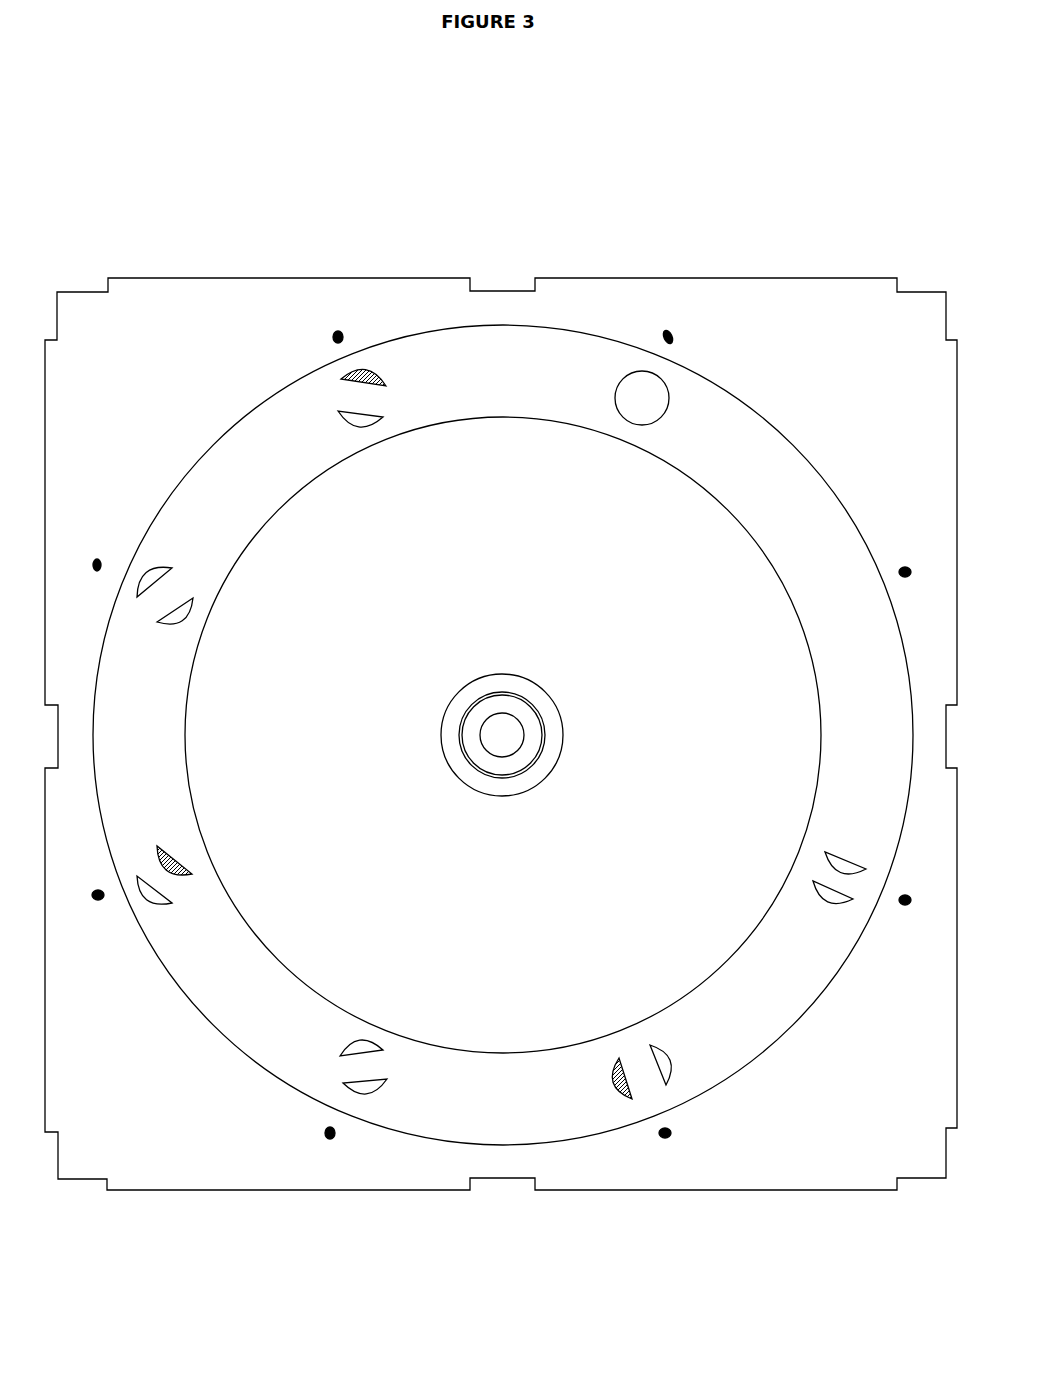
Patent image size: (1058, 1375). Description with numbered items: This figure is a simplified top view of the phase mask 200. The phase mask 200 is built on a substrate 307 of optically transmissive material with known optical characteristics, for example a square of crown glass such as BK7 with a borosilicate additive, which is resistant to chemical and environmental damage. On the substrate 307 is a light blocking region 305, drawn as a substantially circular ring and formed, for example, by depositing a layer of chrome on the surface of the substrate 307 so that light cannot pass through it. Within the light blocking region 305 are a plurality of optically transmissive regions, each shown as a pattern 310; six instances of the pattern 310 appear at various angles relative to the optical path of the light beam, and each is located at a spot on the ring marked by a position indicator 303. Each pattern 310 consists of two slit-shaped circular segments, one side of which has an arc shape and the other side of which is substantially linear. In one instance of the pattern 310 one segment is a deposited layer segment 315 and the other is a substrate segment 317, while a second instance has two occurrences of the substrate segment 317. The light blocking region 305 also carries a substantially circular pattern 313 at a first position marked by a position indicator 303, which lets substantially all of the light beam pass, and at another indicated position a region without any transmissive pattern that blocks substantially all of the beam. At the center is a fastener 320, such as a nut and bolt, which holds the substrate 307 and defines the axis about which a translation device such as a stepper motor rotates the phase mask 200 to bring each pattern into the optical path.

The phase mask 200 is at (433, 213).
The position indicator 303 is at (663, 336).
The light blocking region 305 is at (762, 465).
The substrate 307 is at (234, 1130).
The pattern 310 is at (183, 603).
The pattern 313 is at (617, 410).
The deposited layer segment 315 is at (615, 1090).
The substrate segment 317 is at (866, 872).
The fastener 320 is at (530, 727).